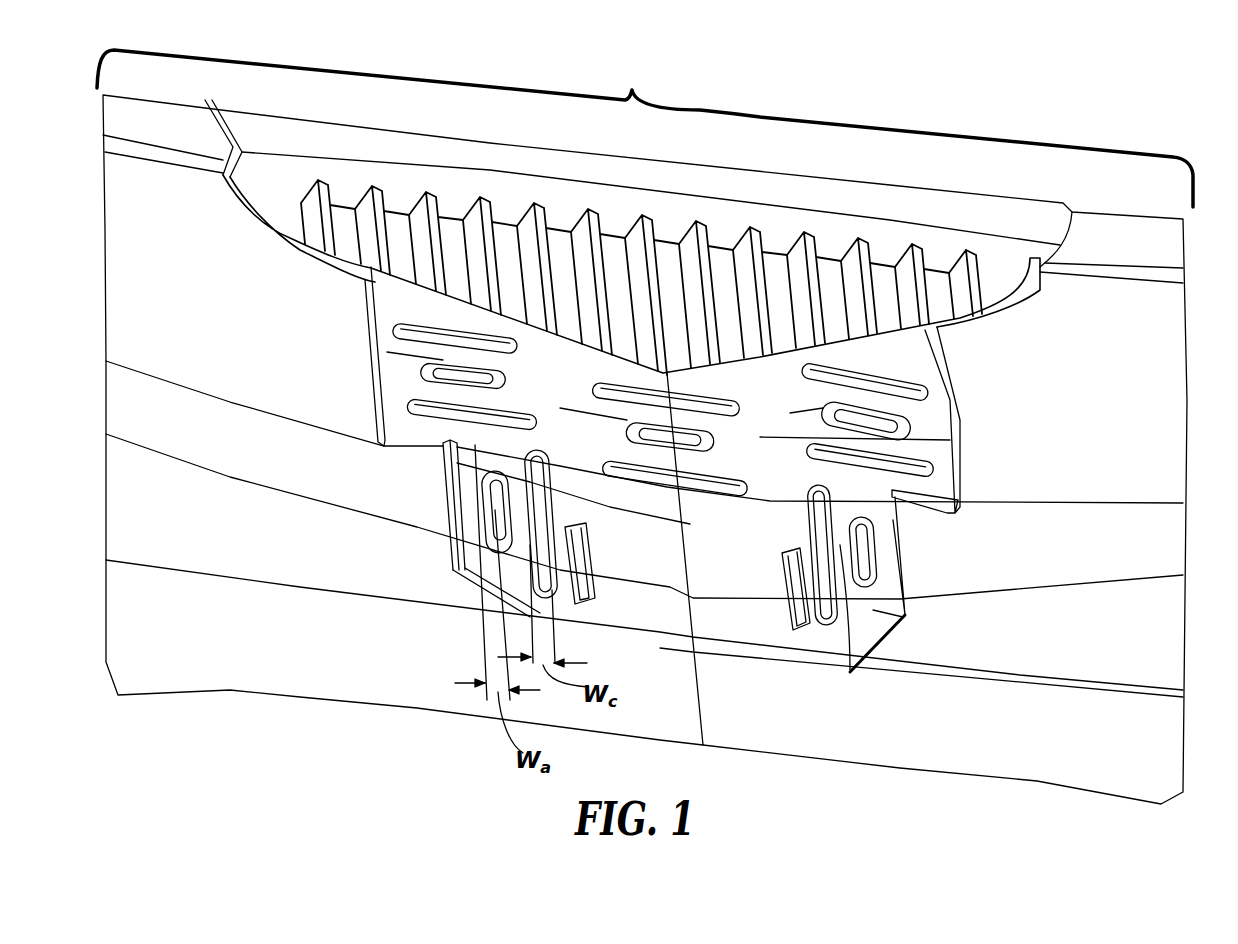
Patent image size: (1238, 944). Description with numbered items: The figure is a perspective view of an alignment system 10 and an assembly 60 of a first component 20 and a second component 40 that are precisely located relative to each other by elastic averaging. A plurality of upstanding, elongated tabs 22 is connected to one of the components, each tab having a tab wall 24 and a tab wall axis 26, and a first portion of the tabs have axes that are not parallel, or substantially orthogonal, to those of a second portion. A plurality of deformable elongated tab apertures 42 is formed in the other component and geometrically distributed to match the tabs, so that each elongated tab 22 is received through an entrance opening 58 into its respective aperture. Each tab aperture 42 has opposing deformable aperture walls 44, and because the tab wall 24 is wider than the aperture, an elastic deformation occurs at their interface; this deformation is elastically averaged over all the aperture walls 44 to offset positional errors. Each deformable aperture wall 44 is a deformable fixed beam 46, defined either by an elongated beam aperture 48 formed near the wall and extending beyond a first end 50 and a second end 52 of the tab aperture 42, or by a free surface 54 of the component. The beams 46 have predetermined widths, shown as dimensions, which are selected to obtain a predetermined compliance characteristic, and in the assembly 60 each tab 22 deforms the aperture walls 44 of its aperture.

The alignment system 10 is at (895, 165).
The first component 20 is at (1125, 208).
The elongated tab 22 is at (428, 375).
The tab wall 24 is at (476, 388).
The tab wall axis 26 is at (933, 390).
The second component 40 is at (1027, 195).
The deformable elongated tab aperture 42 is at (512, 364).
The deformable aperture wall 44 is at (500, 547).
The deformable fixed beam 46 is at (443, 355).
The elongated beam aperture 48 is at (390, 322).
The first end 50 is at (807, 477).
The second end 52 is at (847, 677).
The free surface 54 is at (440, 497).
The entrance opening 58 is at (445, 455).
The assembly 60 is at (632, 90).